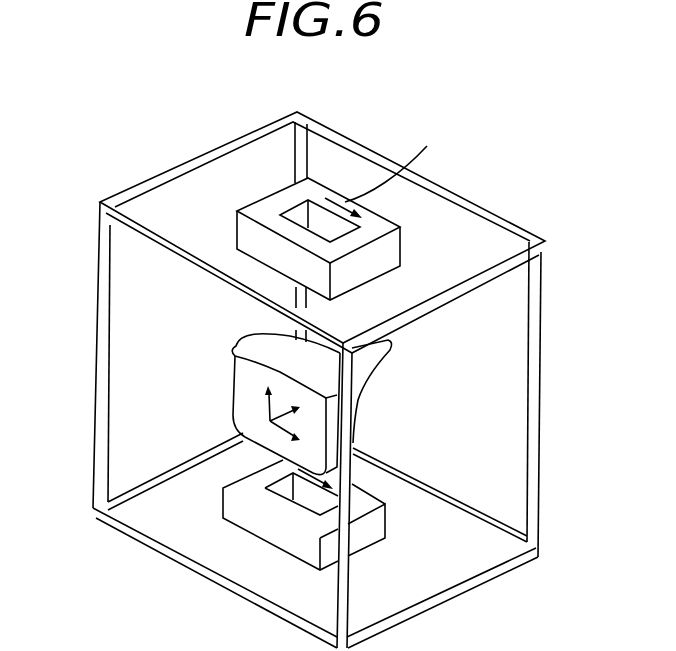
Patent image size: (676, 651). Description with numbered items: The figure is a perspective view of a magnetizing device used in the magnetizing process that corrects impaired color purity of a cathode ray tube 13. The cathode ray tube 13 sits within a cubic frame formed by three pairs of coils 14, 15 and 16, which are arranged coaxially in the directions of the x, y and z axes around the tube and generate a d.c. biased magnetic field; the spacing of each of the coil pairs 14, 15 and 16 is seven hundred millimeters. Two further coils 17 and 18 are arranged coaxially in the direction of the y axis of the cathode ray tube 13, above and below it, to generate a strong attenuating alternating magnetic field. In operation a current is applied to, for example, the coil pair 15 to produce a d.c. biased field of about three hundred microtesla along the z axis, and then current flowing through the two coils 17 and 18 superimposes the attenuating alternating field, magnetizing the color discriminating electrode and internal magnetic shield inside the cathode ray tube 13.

The cathode ray tube 13 is at (242, 378).
The coil pair 14 is at (112, 260).
The coil pair 15 is at (307, 153).
The coil pair 16 is at (512, 218).
The coil 17 is at (387, 251).
The coil 18 is at (273, 502).